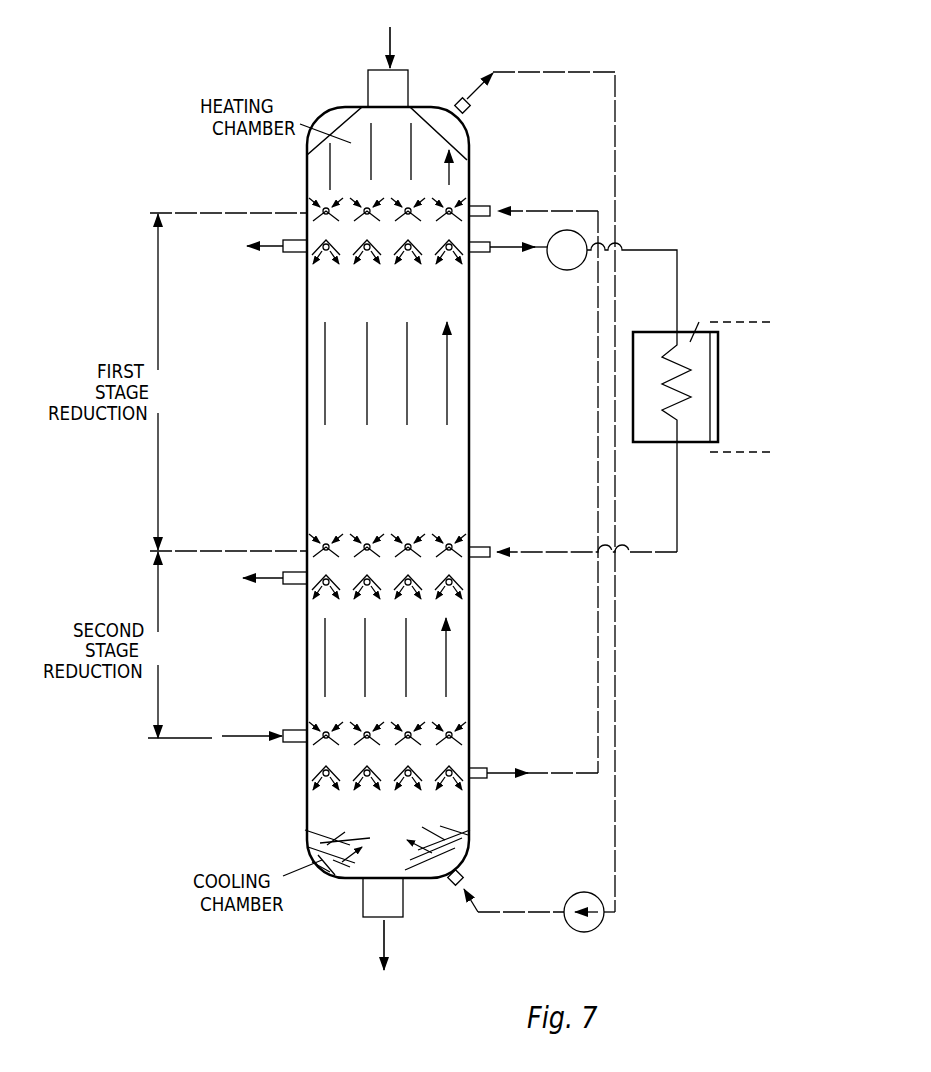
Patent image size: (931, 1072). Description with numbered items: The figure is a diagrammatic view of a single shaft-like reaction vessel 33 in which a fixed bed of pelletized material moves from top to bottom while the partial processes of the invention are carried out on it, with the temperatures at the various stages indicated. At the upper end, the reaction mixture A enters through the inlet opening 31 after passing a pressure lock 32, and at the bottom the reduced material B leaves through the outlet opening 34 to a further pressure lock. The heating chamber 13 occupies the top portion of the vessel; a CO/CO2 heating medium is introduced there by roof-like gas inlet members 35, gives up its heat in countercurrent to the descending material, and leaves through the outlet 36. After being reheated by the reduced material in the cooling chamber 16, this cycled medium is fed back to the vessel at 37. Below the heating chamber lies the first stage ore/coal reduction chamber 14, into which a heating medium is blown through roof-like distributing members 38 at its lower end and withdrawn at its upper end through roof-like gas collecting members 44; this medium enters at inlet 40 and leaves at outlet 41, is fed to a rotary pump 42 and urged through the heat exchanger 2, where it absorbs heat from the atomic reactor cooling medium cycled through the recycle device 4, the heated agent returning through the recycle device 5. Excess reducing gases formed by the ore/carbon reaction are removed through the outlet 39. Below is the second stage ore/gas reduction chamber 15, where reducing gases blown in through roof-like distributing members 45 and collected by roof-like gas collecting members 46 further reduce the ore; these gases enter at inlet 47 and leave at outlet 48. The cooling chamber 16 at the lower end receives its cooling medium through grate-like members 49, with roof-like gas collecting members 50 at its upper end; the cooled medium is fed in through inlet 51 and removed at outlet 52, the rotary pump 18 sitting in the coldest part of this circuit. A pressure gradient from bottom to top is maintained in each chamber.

The heat exchanger 2 is at (688, 443).
The recycle device 4 is at (750, 323).
The recycle device 5 is at (677, 518).
The heating chamber 13 is at (352, 157).
The first stage ore/coal reduction chamber 14 is at (390, 457).
The second stage ore/gas reduction chamber 15 is at (385, 670).
The cooling chamber 16 is at (388, 815).
The rotary pump 18 is at (603, 923).
The inlet opening 31 is at (386, 69).
The pressure lock 32 is at (372, 85).
The reaction vessel 33 is at (472, 413).
The outlet opening 34 is at (379, 921).
The roof-like gas inlet members 35 is at (322, 212).
The outlet 36 is at (464, 99).
The inlet 37 is at (491, 210).
The roof-like distributing members 38 is at (322, 548).
The outlet 39 is at (286, 253).
The inlet 40 is at (491, 558).
The outlet 41 is at (491, 247).
The rotary pump 42 is at (582, 263).
The roof-like gas collecting members 44 is at (321, 246).
The roof-like distributing members 45 is at (320, 734).
The roof-like gas collecting members 46 is at (322, 586).
The inlet 47 is at (286, 743).
The outlet 48 is at (292, 585).
The grate-like members 49 is at (348, 866).
The roof-like gas collecting members 50 is at (322, 772).
The inlet 51 is at (464, 873).
The outlet 52 is at (488, 777).